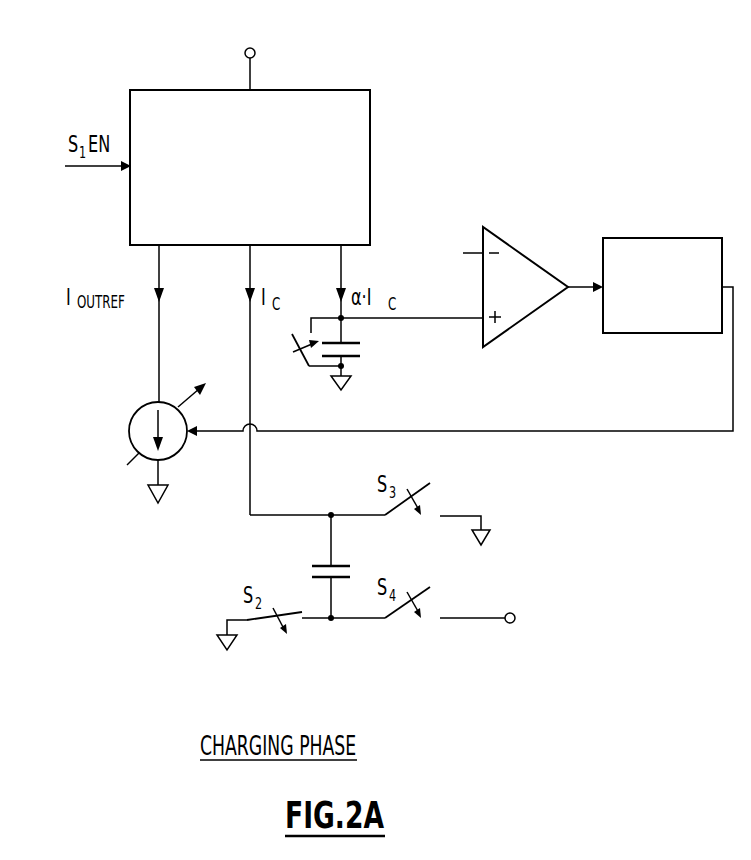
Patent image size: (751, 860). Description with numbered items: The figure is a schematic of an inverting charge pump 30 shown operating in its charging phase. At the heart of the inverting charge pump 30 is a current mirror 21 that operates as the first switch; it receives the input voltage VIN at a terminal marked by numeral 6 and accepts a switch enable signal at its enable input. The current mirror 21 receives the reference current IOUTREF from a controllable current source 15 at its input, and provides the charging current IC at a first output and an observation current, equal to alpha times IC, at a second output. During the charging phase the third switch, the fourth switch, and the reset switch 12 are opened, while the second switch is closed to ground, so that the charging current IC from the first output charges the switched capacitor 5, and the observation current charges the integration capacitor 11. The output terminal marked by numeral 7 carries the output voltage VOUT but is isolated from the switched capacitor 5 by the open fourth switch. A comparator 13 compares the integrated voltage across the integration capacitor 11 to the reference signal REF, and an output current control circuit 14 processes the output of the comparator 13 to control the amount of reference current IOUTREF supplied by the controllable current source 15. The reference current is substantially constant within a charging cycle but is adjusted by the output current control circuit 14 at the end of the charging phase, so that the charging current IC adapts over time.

The inverting charge pump 30 is at (620, 62).
The current mirror 21 is at (370, 163).
The input voltage terminal 6 is at (256, 56).
The integration capacitor 11 is at (355, 358).
The reset switch 12 is at (306, 371).
The comparator 13 is at (533, 313).
The output current control circuit 14 is at (678, 333).
The controllable current source 15 is at (178, 457).
The switched capacitor 5 is at (318, 563).
The output terminal 7 is at (509, 612).